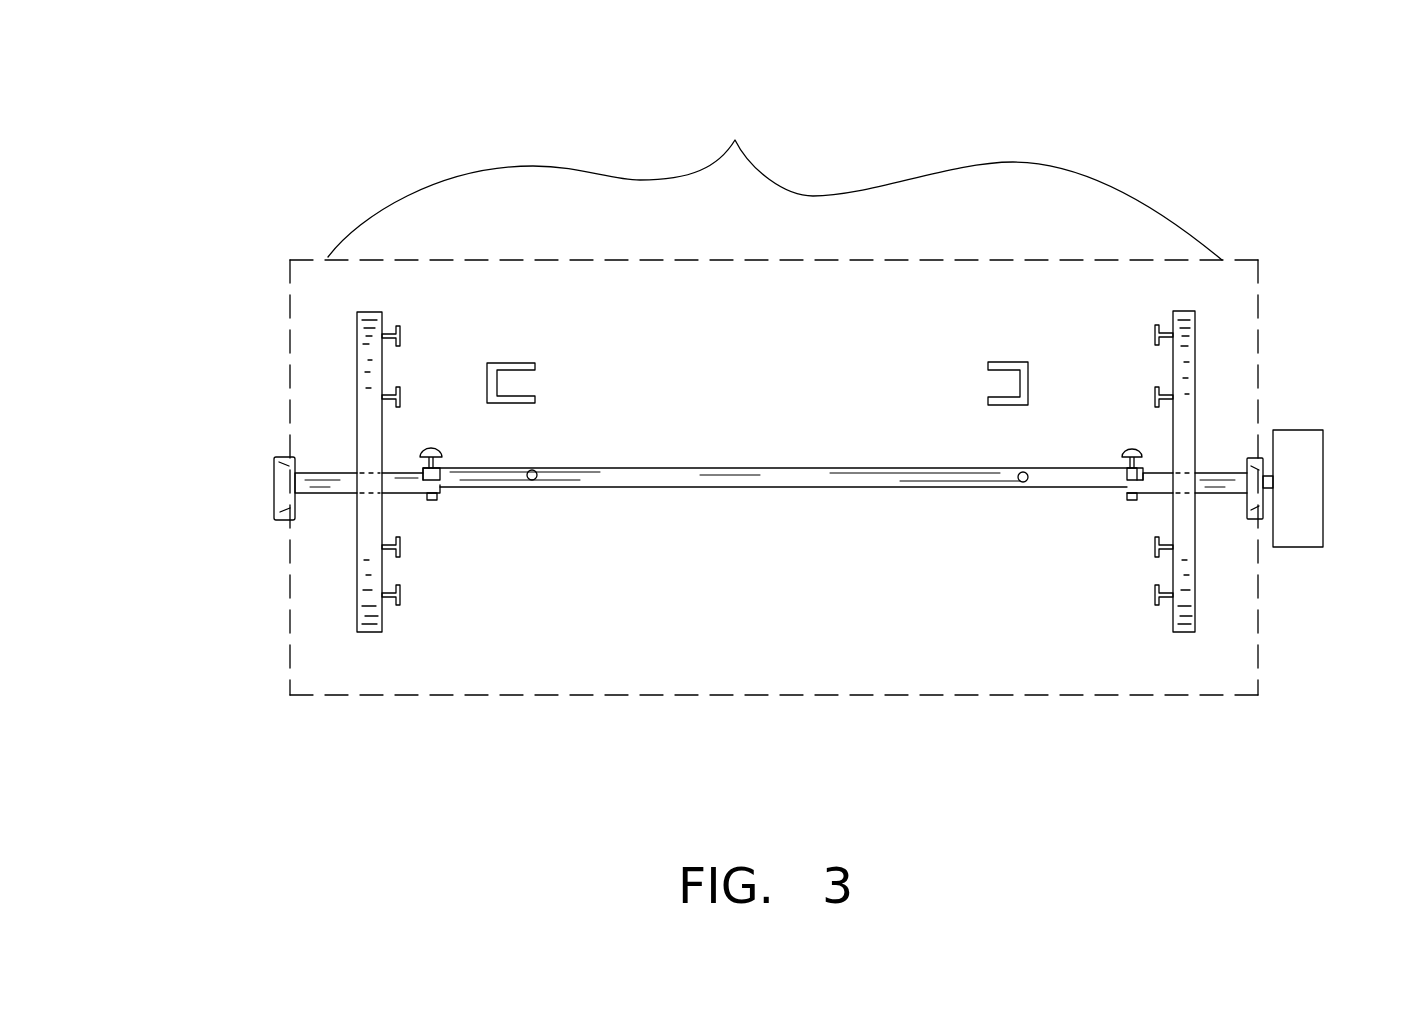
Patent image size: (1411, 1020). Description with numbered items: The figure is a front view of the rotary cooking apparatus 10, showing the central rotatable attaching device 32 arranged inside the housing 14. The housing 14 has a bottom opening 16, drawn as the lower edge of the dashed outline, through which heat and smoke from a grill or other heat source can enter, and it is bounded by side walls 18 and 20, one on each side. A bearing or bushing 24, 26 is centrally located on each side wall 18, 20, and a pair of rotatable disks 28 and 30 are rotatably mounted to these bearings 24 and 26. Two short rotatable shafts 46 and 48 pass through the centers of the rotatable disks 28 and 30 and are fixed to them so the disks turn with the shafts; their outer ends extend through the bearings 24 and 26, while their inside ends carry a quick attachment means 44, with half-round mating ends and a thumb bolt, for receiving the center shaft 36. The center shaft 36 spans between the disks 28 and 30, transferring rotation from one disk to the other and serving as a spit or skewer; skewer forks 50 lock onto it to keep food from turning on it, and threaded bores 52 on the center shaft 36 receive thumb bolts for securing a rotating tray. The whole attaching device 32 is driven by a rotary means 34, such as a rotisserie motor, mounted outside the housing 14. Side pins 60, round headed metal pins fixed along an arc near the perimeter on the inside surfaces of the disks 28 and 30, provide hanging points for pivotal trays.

The rotary cooking apparatus 10 is at (1307, 146).
The housing 14 is at (745, 262).
The bottom opening 16 is at (558, 697).
The side wall 18 is at (288, 351).
The side wall 20 is at (1262, 318).
The bearing or bushing 24 is at (274, 473).
The bearing or bushing 26 is at (1245, 520).
The rotatable disk 28 is at (373, 312).
The rotatable disk 30 is at (1185, 311).
The central rotatable attaching device 32 is at (775, 171).
The rotary means 34 is at (1302, 430).
The center shaft 36 is at (763, 467).
The quick attachment means 44 is at (461, 497).
The short rotatable shaft 46 is at (337, 493).
The short rotatable shaft 48 is at (1222, 473).
The skewer fork 50 is at (572, 440).
The threaded bore 52 is at (526, 481).
The side pin 60 is at (400, 600).